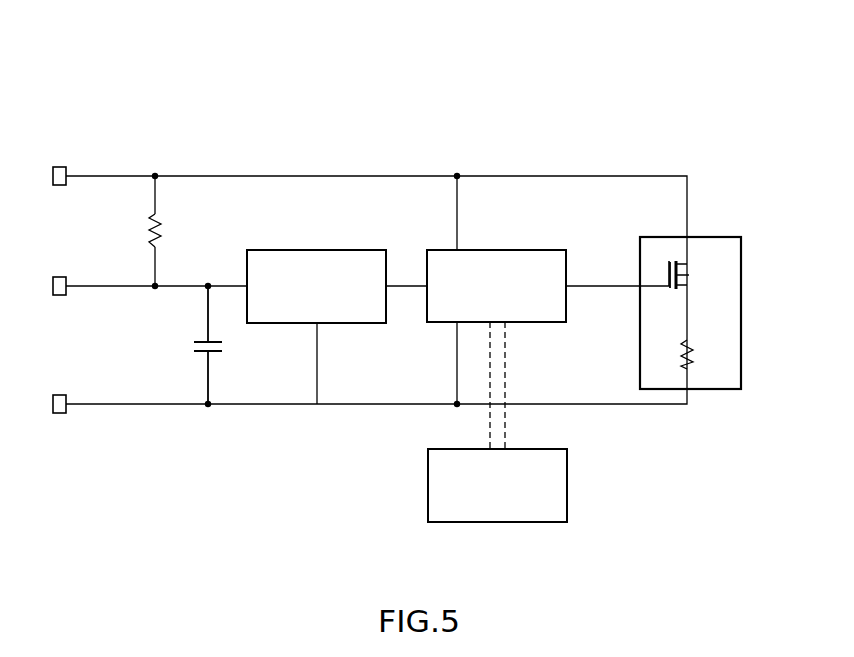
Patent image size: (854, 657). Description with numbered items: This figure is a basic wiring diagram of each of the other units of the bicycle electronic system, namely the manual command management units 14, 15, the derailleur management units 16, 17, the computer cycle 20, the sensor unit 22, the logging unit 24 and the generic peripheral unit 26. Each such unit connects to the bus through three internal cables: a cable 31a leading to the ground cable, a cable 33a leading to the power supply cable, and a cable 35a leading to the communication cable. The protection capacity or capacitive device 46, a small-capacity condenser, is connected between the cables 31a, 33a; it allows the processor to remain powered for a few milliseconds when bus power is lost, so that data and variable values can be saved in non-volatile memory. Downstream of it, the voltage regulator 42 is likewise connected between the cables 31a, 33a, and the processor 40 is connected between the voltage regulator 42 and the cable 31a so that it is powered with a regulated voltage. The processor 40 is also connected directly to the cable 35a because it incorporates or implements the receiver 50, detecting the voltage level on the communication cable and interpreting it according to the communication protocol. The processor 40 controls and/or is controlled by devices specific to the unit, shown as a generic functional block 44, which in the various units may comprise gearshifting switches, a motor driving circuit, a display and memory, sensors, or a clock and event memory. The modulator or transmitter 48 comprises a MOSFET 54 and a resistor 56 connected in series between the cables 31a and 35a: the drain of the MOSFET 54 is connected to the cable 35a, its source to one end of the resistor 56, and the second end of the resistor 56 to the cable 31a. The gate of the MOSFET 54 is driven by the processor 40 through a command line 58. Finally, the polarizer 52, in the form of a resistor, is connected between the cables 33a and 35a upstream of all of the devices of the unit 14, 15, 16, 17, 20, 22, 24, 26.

The manual command management unit 14 is at (409, 296).
The manual command management unit 15 is at (409, 296).
The derailleur management unit 16 is at (409, 296).
The derailleur management unit 17 is at (409, 296).
The computer cycle 20 is at (409, 296).
The sensor unit 22 is at (409, 296).
The logging unit 24 is at (409, 296).
The generic peripheral unit 26 is at (696, 98).
The cable leading to the ground cable 31a is at (97, 406).
The cable leading to the power supply cable 33a is at (90, 290).
The cable leading to the communication cable 35a is at (90, 176).
The processor 40 is at (496, 221).
The receiver 50 is at (505, 250).
The voltage regulator 42 is at (297, 250).
The functional block 44 is at (534, 522).
The capacitive device 46 is at (216, 354).
The transmitter 48 is at (722, 237).
The polarizer 52 is at (165, 235).
The MOSFET 54 is at (690, 277).
The resistor 56 is at (698, 366).
The command line 58 is at (606, 286).